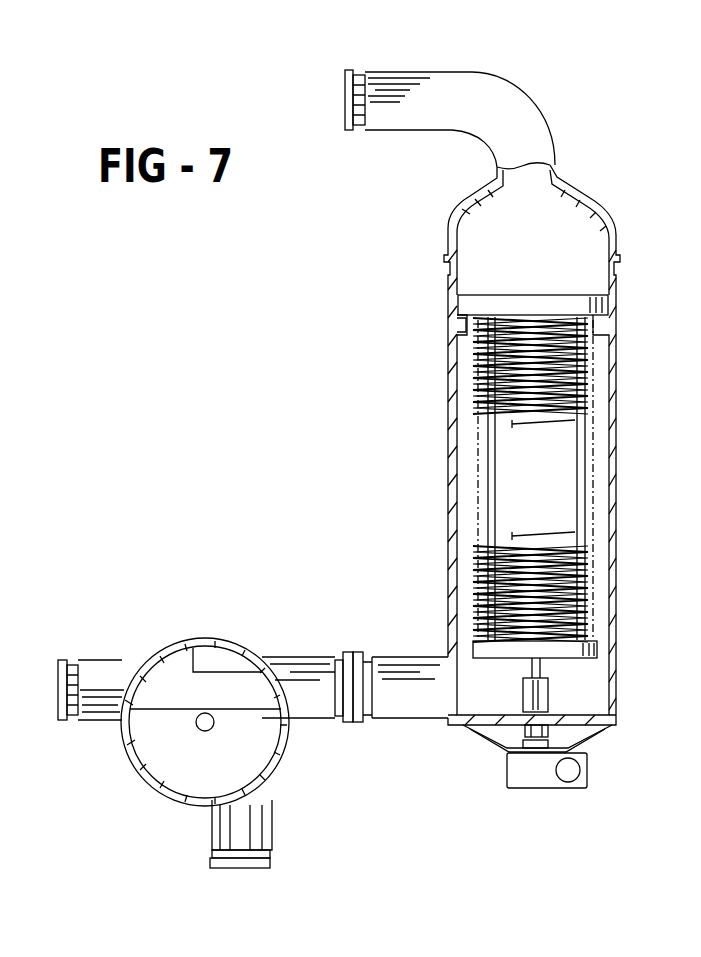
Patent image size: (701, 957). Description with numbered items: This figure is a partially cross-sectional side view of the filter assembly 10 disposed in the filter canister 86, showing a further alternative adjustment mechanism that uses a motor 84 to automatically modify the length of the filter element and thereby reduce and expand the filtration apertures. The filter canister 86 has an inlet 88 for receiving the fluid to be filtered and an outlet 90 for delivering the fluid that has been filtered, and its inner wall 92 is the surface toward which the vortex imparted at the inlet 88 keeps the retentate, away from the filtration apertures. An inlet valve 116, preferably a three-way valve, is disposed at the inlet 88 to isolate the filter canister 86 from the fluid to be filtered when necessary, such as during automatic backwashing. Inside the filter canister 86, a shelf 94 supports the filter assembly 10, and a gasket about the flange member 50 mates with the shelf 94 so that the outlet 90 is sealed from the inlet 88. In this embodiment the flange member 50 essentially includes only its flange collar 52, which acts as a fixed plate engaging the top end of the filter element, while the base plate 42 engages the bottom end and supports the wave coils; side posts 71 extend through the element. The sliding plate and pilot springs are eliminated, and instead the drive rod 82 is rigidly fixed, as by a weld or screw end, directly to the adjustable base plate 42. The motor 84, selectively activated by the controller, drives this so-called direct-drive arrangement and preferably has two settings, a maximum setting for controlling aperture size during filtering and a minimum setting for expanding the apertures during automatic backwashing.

The filter assembly 10 is at (604, 162).
The flange member 50 is at (487, 272).
The flange collar 52 is at (555, 298).
The filter canister 86 is at (616, 385).
The outlet 90 is at (348, 108).
The shelf 94 is at (462, 325).
The side posts 71 is at (490, 487).
The inner wall 92 is at (606, 536).
The base plate 42 is at (586, 641).
The drive rod 82 is at (546, 684).
The inlet 88 is at (462, 690).
The motor 84 is at (578, 788).
The inlet valve 116 is at (150, 795).